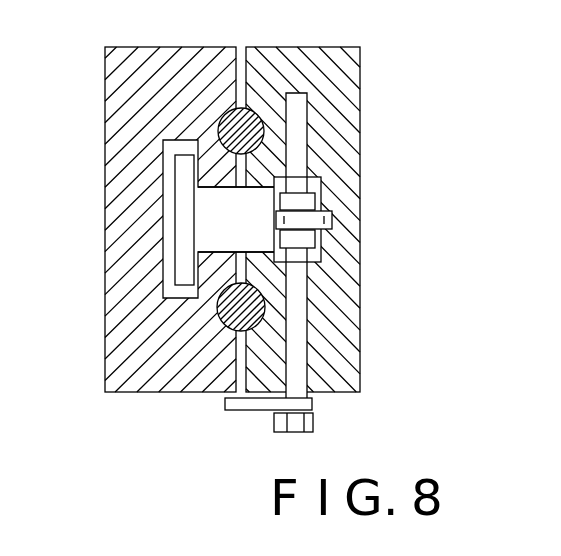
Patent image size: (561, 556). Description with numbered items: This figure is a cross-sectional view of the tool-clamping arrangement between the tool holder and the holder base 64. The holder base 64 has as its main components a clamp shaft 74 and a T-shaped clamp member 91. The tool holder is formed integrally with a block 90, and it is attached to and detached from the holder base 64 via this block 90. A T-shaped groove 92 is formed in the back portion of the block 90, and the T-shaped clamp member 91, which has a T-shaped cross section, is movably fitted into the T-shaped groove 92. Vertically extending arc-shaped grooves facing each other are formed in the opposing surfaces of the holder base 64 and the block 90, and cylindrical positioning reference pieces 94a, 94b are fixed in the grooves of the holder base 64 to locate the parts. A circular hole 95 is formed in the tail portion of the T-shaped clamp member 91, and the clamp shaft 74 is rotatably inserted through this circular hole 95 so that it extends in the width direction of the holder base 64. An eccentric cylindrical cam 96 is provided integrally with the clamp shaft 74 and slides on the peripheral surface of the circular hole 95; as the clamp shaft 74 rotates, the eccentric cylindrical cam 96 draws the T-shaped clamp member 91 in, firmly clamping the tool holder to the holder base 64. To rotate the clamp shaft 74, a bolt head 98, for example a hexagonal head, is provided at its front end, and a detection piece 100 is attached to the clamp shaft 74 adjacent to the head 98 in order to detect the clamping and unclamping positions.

The holder base 64 is at (342, 323).
The clamp shaft 74 is at (297, 115).
The block 90 is at (122, 115).
The T-shaped clamp member 91 is at (205, 232).
The T-shaped groove 92 is at (175, 290).
The cylindrical positioning reference piece 94a is at (258, 114).
The cylindrical positioning reference piece 94b is at (228, 328).
The circular hole 95 is at (334, 219).
The eccentric cylindrical cam 96 is at (305, 200).
The bolt head 98 is at (309, 420).
The detection piece 100 is at (257, 405).